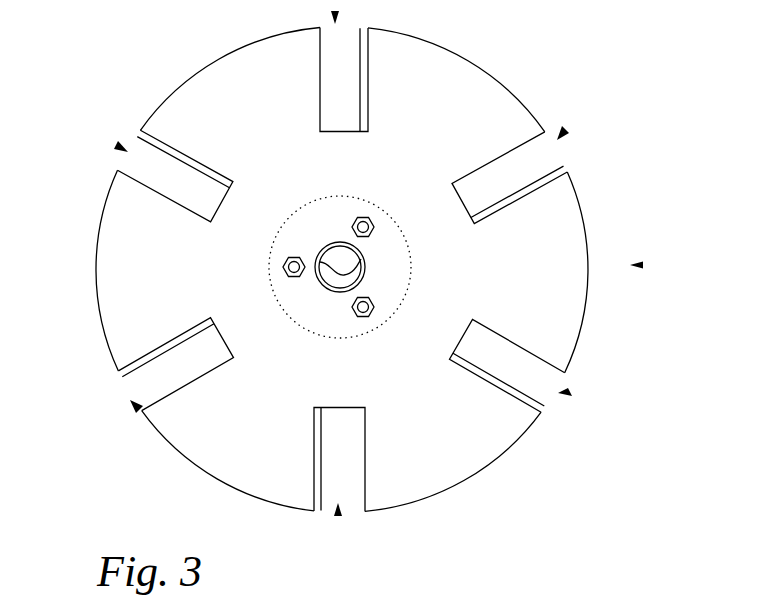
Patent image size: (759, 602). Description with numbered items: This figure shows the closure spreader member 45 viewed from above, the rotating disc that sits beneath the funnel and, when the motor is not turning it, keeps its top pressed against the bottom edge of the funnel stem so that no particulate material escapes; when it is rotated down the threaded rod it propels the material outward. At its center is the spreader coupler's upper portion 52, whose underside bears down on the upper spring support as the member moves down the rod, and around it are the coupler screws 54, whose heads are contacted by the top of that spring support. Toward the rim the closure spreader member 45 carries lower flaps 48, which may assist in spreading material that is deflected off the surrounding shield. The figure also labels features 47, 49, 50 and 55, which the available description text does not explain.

The closure spreader member 45 is at (644, 265).
The lip along slot edge 47 is at (369, 97).
The lower flaps 48 is at (190, 158).
The slot opening direction 49 is at (116, 145).
The central hub 50 is at (335, 246).
The spreader coupler's upper portion 52 is at (328, 338).
The coupler screws 54 is at (372, 220).
The pin 55 is at (372, 230).